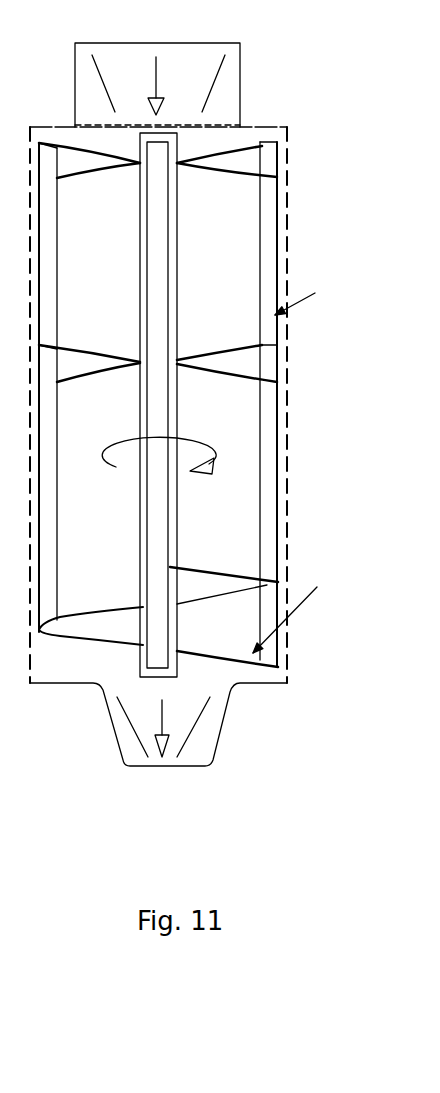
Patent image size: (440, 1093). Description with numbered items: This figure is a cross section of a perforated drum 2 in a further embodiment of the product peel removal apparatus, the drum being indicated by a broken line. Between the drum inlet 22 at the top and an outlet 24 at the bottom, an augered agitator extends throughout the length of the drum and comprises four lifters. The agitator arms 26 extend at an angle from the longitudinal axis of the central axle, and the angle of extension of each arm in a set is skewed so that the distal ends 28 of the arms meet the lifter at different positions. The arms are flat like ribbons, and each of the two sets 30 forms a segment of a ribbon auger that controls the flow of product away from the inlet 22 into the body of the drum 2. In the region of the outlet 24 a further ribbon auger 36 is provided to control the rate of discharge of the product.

The perforated drum 2 is at (290, 402).
The drum inlet 22 is at (132, 58).
The outlet 24 is at (120, 727).
The agitator arms 26 is at (218, 152).
The distal ends 28 is at (265, 177).
The sets of arms 30 is at (158, 405).
The further ribbon auger 36 is at (118, 586).